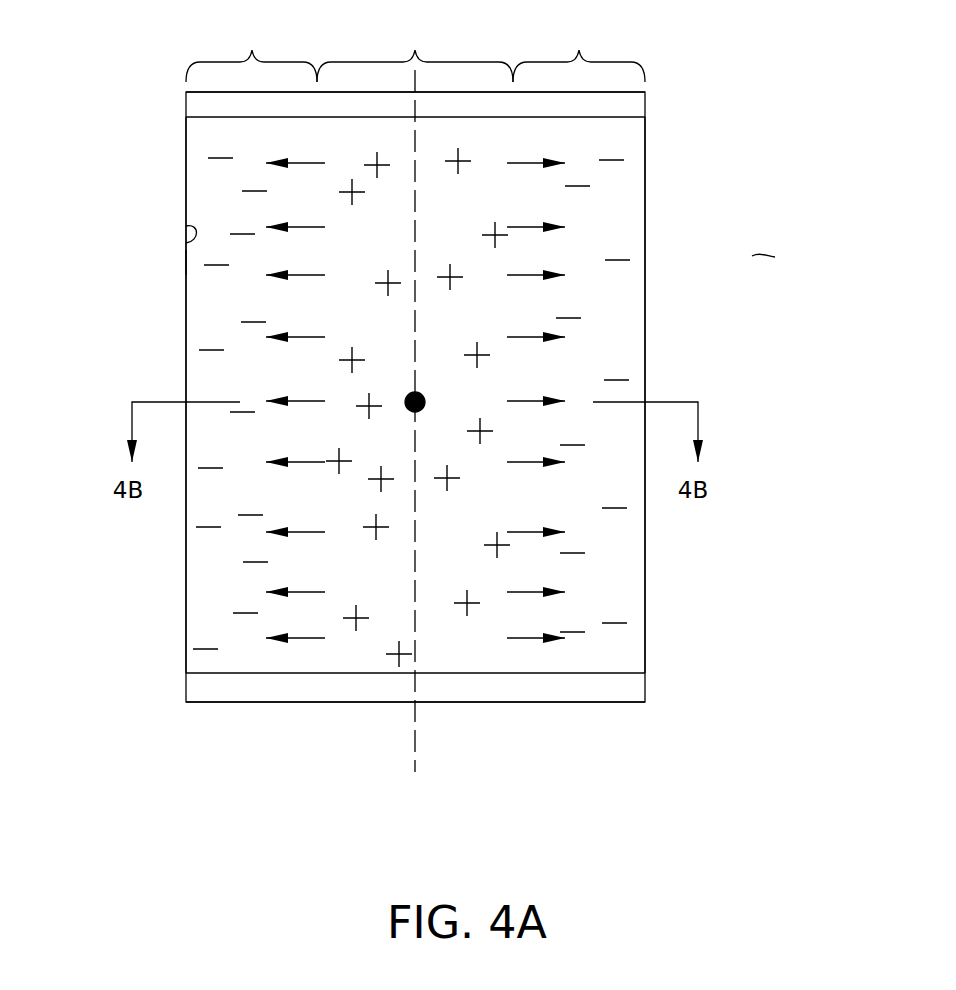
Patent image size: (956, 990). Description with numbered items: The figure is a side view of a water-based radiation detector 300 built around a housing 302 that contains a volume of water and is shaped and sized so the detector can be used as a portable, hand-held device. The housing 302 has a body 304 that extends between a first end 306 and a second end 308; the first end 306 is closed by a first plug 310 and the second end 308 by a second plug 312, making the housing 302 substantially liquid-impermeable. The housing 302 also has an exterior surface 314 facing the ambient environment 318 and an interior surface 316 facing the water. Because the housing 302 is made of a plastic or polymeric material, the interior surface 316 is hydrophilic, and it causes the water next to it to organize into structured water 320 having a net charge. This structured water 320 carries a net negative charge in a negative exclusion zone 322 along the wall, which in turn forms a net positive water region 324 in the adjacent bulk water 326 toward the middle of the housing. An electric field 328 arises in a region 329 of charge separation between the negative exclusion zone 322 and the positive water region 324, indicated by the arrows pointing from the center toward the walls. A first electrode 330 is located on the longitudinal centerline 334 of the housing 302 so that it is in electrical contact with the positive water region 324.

The water-based radiation detector 300 is at (682, 146).
The housing 302 is at (186, 193).
The body 304 is at (662, 310).
The first end 306 is at (186, 117).
The second end 308 is at (645, 673).
The first plug 310 is at (590, 108).
The second plug 312 is at (573, 688).
The exterior surface 314 is at (185, 265).
The interior surface 316 is at (186, 242).
The ambient environment 318 is at (752, 256).
The structured water 320 is at (415, 45).
The negative exclusion zone 322 is at (612, 226).
The positive water region 324 is at (399, 540).
The bulk water 326 is at (415, 45).
The electric field 328 is at (523, 533).
The region of separation of charge 329 is at (273, 654).
The first electrode 330 is at (425, 396).
The longitudinal centerline 334 is at (415, 743).